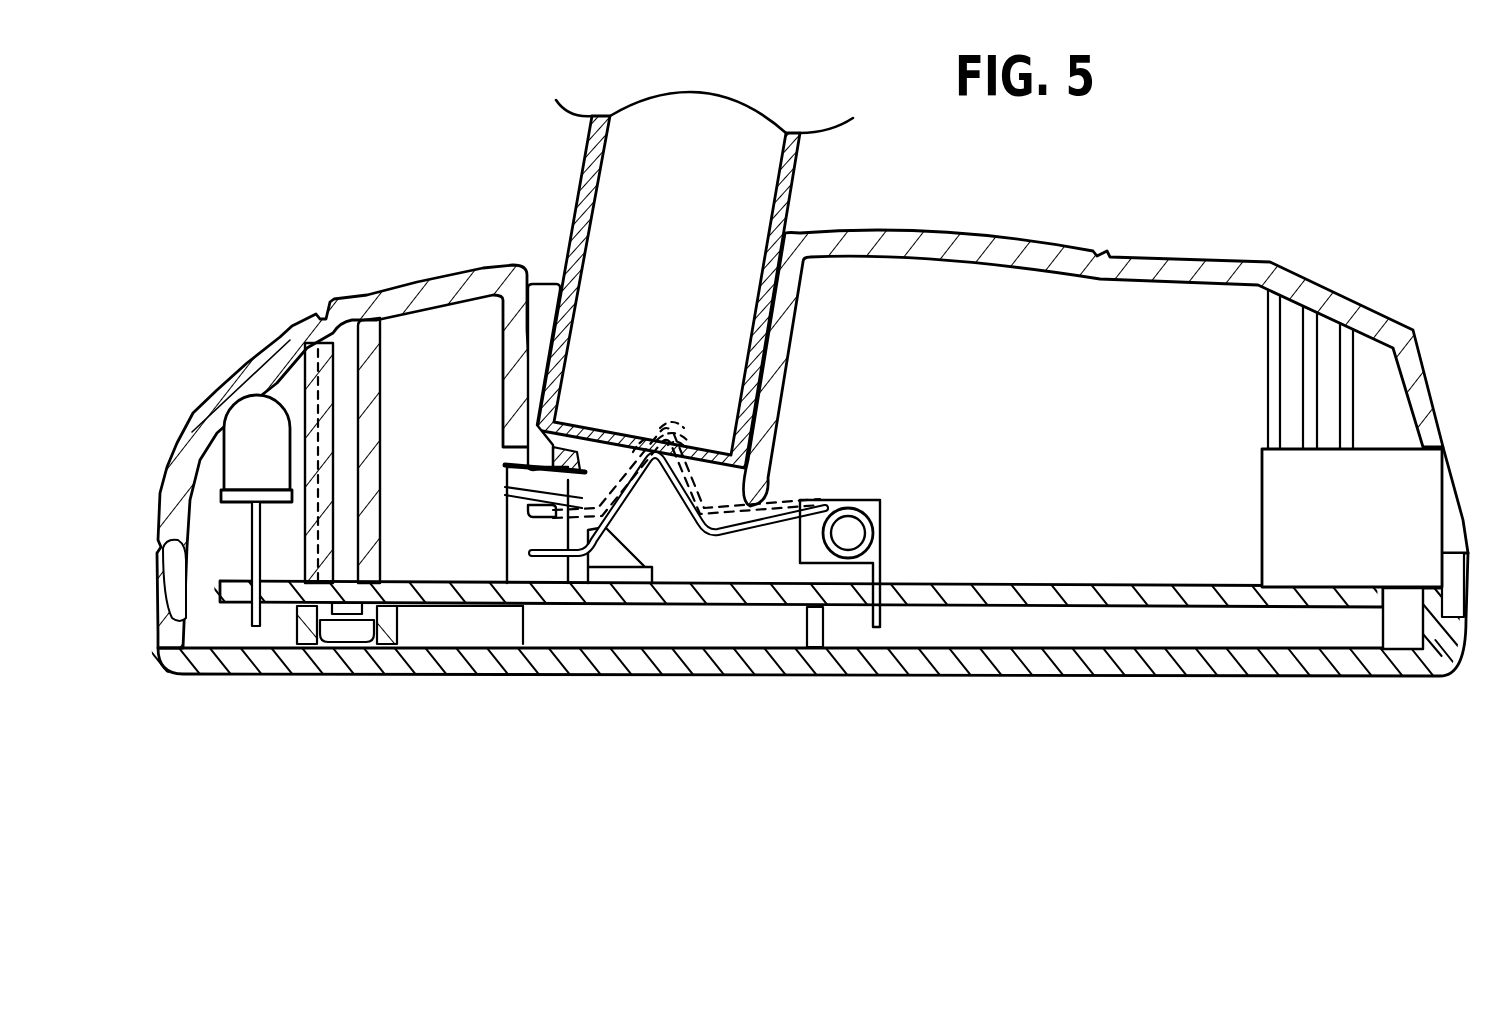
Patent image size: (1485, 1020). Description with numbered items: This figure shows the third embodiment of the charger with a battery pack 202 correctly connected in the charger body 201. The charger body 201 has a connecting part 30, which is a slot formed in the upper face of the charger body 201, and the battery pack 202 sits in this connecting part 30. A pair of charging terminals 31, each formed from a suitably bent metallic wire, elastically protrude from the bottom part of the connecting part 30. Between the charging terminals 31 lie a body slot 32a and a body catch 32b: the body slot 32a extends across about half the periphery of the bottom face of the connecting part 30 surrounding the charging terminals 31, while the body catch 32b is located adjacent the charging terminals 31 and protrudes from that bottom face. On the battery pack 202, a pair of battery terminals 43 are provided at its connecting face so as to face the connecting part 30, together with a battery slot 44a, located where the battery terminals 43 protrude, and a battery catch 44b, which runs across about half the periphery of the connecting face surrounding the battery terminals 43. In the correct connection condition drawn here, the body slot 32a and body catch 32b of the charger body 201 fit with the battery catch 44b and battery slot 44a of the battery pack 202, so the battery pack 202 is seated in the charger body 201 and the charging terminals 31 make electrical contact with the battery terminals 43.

The charger body 201 is at (1143, 253).
The battery pack 202 is at (587, 142).
The connecting part 30 is at (548, 278).
The charging terminals 31 is at (694, 540).
The body slot 32a is at (545, 515).
The body catch 32b is at (735, 530).
The battery terminals 43 is at (640, 432).
The battery slot 44a is at (677, 443).
The battery catch 44b is at (575, 475).